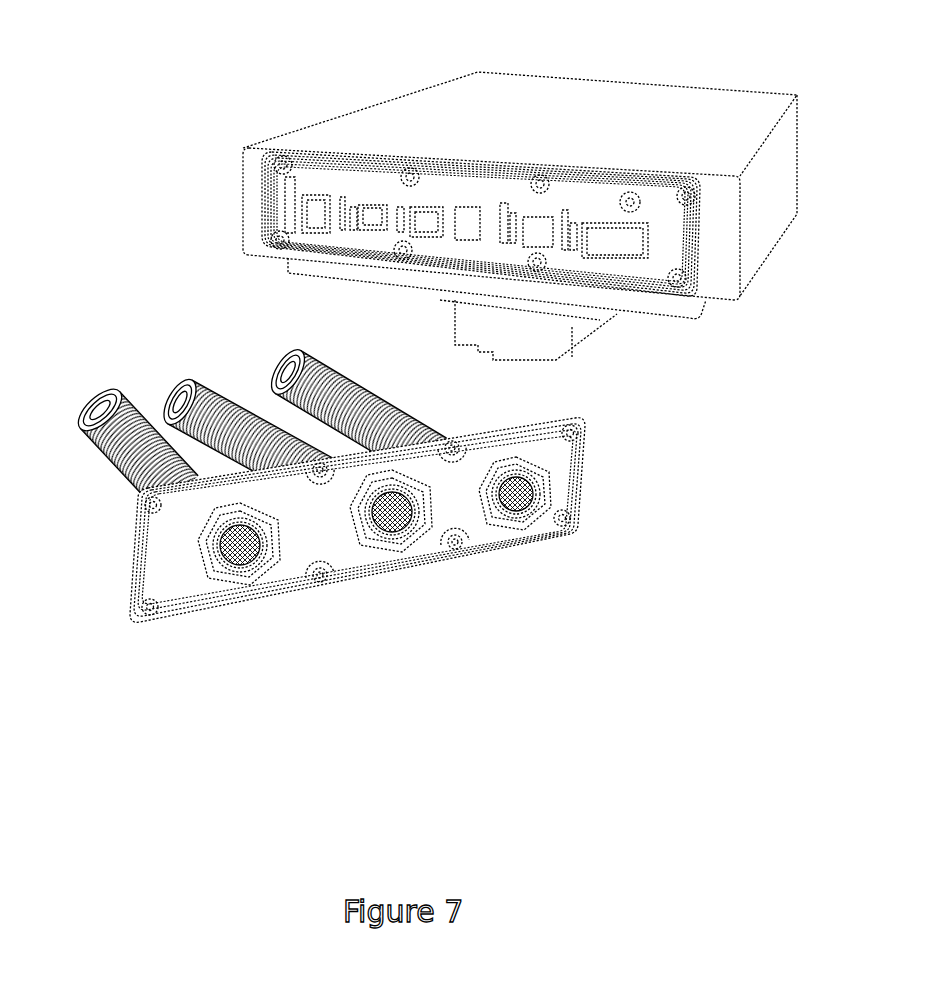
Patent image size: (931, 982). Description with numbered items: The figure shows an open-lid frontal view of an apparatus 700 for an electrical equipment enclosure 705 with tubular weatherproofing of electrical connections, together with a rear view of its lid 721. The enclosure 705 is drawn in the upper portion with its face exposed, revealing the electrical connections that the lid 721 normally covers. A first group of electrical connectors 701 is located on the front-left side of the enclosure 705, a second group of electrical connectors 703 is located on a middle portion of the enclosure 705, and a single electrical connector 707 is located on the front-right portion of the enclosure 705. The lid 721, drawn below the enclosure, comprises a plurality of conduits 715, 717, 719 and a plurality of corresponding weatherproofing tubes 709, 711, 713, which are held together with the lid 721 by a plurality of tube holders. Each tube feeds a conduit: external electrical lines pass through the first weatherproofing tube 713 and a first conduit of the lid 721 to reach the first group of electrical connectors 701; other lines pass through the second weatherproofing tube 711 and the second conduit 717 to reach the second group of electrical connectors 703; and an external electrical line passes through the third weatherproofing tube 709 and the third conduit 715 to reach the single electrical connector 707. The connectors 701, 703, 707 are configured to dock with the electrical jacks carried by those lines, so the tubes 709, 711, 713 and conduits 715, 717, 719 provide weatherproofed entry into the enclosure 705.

The apparatus 700 is at (409, 853).
The first group of electrical connectors 701 is at (338, 180).
The second group of electrical connectors 703 is at (477, 178).
The electrical equipment enclosure 705 is at (495, 105).
The single electrical connector 707 is at (631, 200).
The third weatherproofing tube 709 is at (98, 405).
The second weatherproofing tube 711 is at (180, 390).
The first weatherproofing tube 713 is at (283, 362).
The third conduit 715 is at (248, 575).
The second conduit 717 is at (403, 540).
The conduit 719 is at (528, 522).
The lid 721 is at (560, 478).